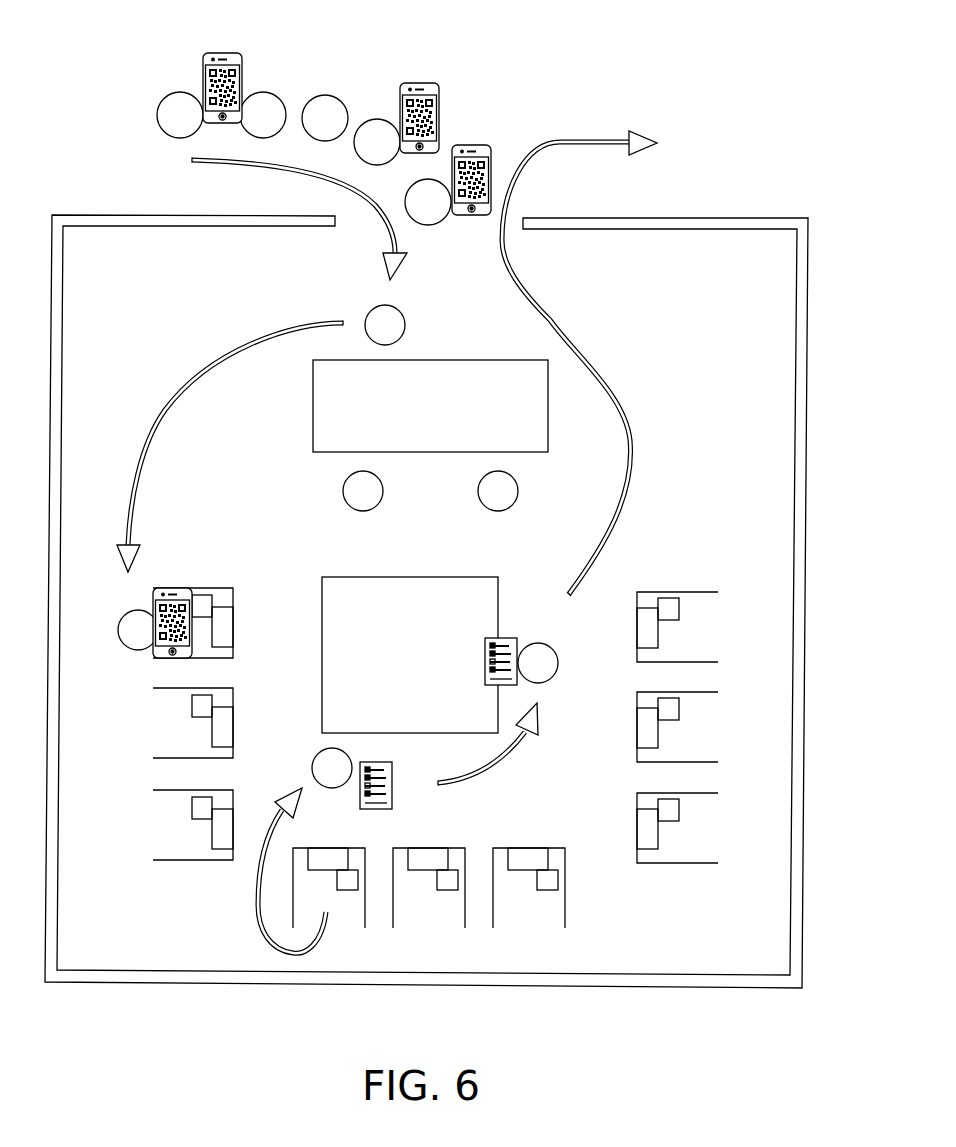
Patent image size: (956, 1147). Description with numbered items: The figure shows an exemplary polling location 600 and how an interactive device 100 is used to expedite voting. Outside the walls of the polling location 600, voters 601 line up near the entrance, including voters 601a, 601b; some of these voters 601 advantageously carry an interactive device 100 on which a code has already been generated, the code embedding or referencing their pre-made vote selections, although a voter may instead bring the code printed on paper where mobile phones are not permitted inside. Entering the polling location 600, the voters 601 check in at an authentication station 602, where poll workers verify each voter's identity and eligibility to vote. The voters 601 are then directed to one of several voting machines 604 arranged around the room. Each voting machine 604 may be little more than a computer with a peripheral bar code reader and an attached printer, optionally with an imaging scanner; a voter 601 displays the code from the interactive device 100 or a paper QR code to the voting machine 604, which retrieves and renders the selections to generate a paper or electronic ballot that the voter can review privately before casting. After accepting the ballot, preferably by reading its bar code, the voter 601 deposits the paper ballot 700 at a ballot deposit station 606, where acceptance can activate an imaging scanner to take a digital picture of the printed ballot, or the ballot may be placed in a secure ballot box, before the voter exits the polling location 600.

The interactive device 100 is at (240, 53).
The polling location 600 is at (768, 216).
The voter 601 is at (376, 160).
The voter 601a is at (180, 115).
The voter 601b is at (263, 115).
The authentication station 602 is at (500, 360).
The voting machine 604 is at (233, 630).
The ballot deposit station 606 is at (410, 655).
The paper ballot 700 is at (392, 782).